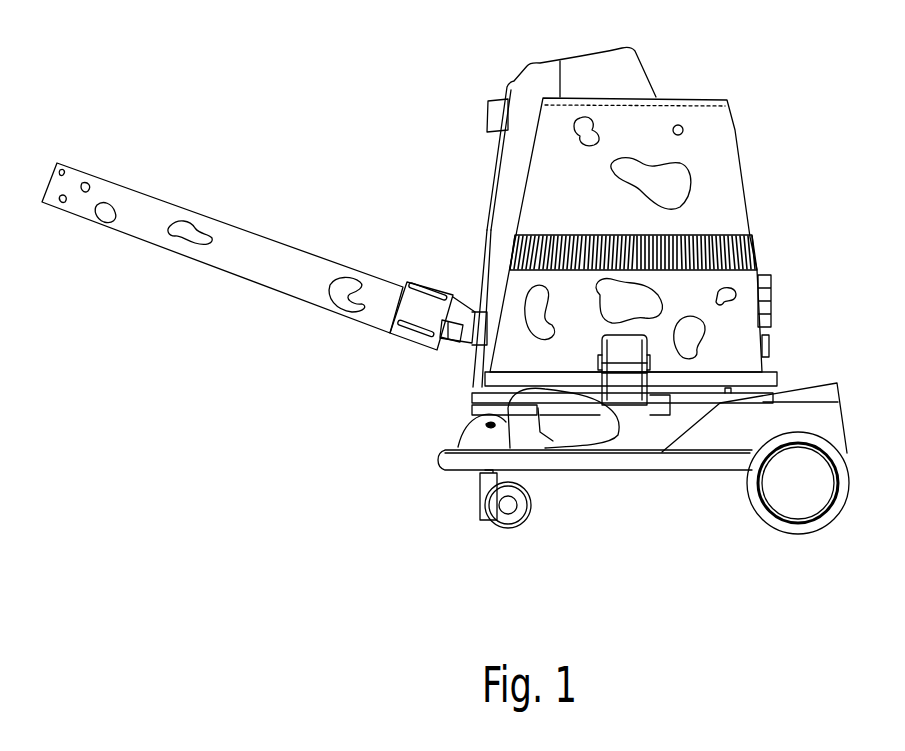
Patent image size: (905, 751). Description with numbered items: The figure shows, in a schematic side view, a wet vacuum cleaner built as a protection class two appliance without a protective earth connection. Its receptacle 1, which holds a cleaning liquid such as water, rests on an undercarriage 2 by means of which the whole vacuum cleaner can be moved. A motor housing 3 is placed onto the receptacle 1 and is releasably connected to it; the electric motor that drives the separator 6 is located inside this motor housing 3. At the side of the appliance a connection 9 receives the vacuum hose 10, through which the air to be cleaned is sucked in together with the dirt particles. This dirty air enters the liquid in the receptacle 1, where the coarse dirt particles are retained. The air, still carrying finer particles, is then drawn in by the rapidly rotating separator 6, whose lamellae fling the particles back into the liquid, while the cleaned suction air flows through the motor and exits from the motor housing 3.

The receptacle 1 is at (627, 430).
The undercarriage 2 is at (578, 467).
The motor housing 3 is at (752, 208).
The separator 6 is at (660, 382).
The connection 9 is at (470, 350).
The vacuum hose 10 is at (245, 250).